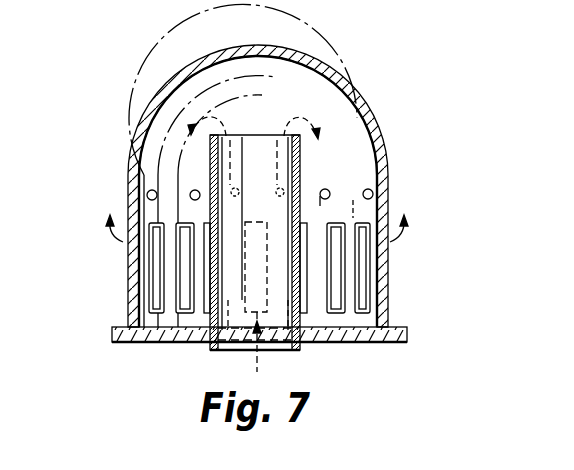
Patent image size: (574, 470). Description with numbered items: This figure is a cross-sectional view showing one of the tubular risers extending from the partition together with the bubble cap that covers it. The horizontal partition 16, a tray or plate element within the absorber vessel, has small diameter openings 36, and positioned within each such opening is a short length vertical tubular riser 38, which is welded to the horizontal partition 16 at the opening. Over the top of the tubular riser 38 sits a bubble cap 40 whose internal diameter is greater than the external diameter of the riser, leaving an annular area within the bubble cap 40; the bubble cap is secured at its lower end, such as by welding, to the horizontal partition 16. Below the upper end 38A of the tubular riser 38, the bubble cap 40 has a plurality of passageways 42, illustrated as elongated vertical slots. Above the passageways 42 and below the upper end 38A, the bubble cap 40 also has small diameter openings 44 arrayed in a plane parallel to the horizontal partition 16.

The horizontal partition 16 is at (120, 327).
The small diameter openings 36 is at (223, 343).
The tubular riser 38 is at (300, 155).
The upper end of tubular riser 38A is at (245, 135).
The bubble cap 40 is at (358, 93).
The passageways 42 is at (338, 280).
The small diameter openings 44 is at (325, 194).